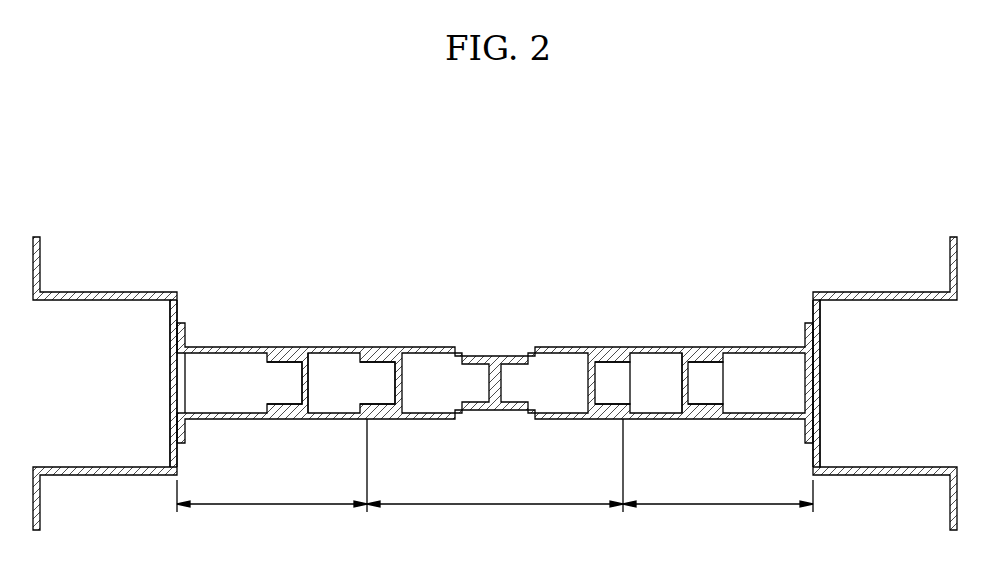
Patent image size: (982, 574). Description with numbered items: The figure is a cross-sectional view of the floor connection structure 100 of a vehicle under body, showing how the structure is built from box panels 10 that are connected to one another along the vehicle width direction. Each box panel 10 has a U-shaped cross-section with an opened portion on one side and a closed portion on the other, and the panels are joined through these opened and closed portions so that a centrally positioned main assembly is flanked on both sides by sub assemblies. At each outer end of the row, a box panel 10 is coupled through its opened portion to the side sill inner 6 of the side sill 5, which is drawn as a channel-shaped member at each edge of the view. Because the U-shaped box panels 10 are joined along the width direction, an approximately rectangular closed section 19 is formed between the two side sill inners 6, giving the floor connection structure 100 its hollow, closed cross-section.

The floor connection structure 100 is at (480, 154).
The side sill 5 is at (495, 367).
The side sill inner 6 is at (170, 381).
The box panel 10 is at (495, 351).
The closed section 19 is at (250, 387).